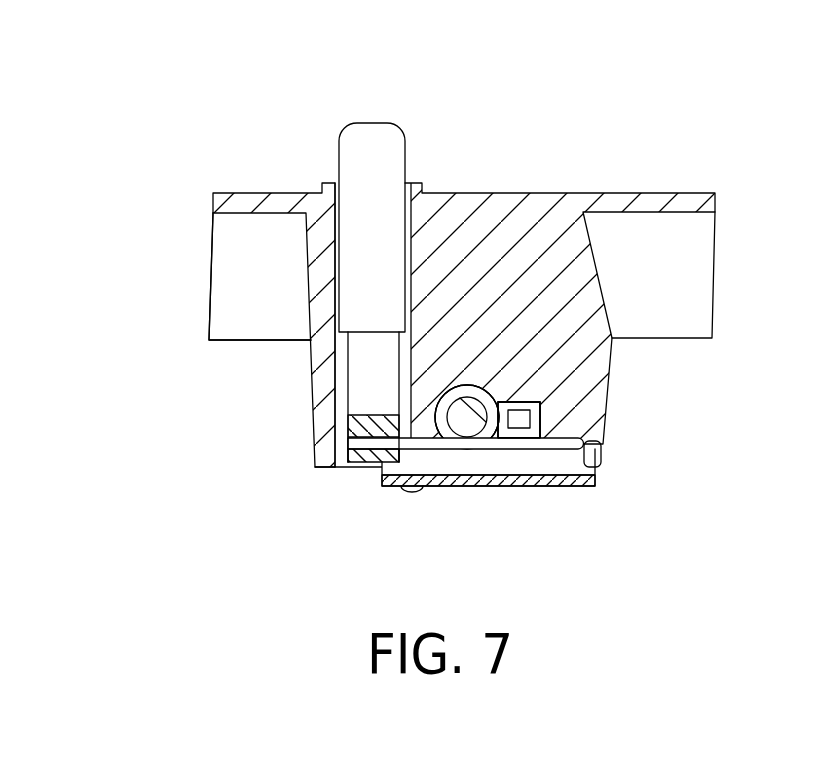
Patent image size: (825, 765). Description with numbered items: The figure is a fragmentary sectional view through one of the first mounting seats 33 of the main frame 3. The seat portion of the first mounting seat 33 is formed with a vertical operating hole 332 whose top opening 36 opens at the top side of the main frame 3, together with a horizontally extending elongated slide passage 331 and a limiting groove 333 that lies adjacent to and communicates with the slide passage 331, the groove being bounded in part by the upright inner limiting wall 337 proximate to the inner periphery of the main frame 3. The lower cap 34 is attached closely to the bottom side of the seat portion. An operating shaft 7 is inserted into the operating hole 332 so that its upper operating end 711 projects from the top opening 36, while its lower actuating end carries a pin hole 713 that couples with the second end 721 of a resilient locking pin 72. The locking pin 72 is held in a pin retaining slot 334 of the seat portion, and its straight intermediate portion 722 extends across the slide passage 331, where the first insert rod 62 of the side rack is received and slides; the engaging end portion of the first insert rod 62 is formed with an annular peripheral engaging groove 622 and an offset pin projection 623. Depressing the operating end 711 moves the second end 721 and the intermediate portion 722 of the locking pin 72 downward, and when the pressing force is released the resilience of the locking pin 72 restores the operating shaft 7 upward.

The main frame 3 is at (645, 190).
The first mounting seat 33 is at (610, 362).
The slide passage 331 is at (467, 385).
The operating hole 332 is at (333, 366).
The limiting groove 333 is at (515, 402).
The pin retaining slot 334 is at (602, 445).
The inner limiting wall 337 is at (530, 403).
The lower cap 34 is at (512, 480).
The top opening 36 is at (337, 183).
The first insert rod 62 is at (465, 424).
The annular peripheral engaging groove 622 is at (443, 423).
The pin projection 623 is at (510, 420).
The operating shaft 7 is at (415, 240).
The upper operating end 711 is at (387, 158).
The pin hole 713 is at (398, 414).
The resilient locking pin 72 is at (563, 442).
The second end 721 is at (363, 448).
The intermediate portion 722 is at (473, 450).